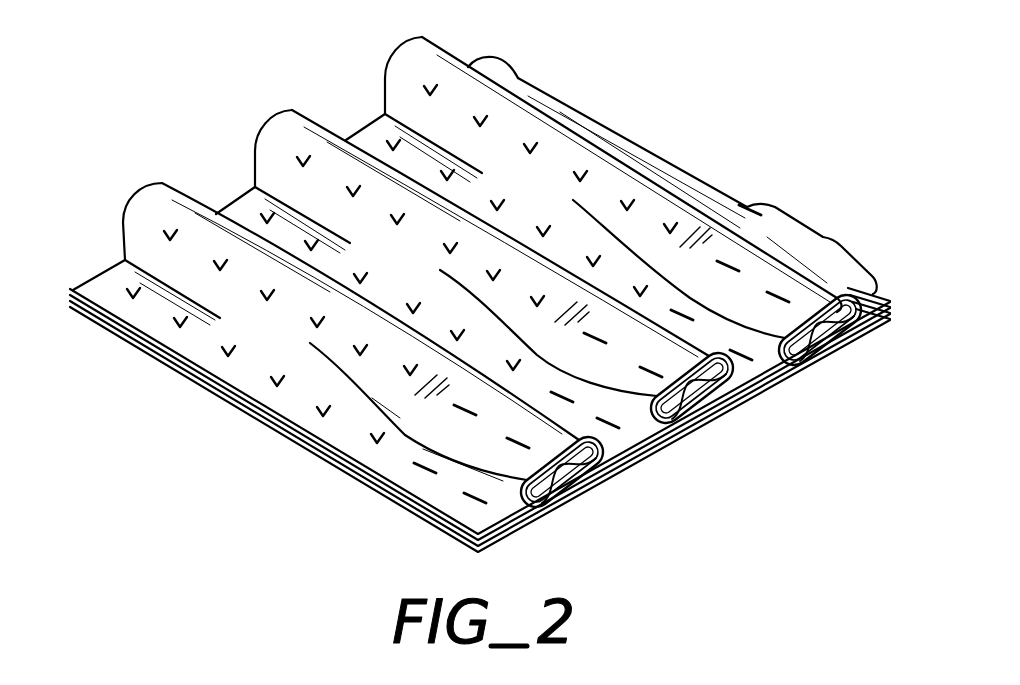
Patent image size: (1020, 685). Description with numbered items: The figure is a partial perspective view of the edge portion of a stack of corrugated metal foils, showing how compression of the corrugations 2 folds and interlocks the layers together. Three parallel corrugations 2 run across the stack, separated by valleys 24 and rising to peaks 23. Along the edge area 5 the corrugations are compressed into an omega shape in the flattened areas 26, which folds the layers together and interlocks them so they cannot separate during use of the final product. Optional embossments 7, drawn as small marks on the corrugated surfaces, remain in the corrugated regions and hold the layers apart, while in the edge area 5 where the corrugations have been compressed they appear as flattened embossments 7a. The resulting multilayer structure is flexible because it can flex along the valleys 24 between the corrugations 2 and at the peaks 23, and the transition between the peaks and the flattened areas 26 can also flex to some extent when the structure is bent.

The corrugations 2 is at (273, 147).
The edge area 5 is at (833, 235).
The embossments 7 is at (400, 152).
The flattened embossments 7a is at (473, 499).
The peaks 23 is at (400, 187).
The valleys 24 is at (353, 413).
The flattened areas 26 is at (667, 424).